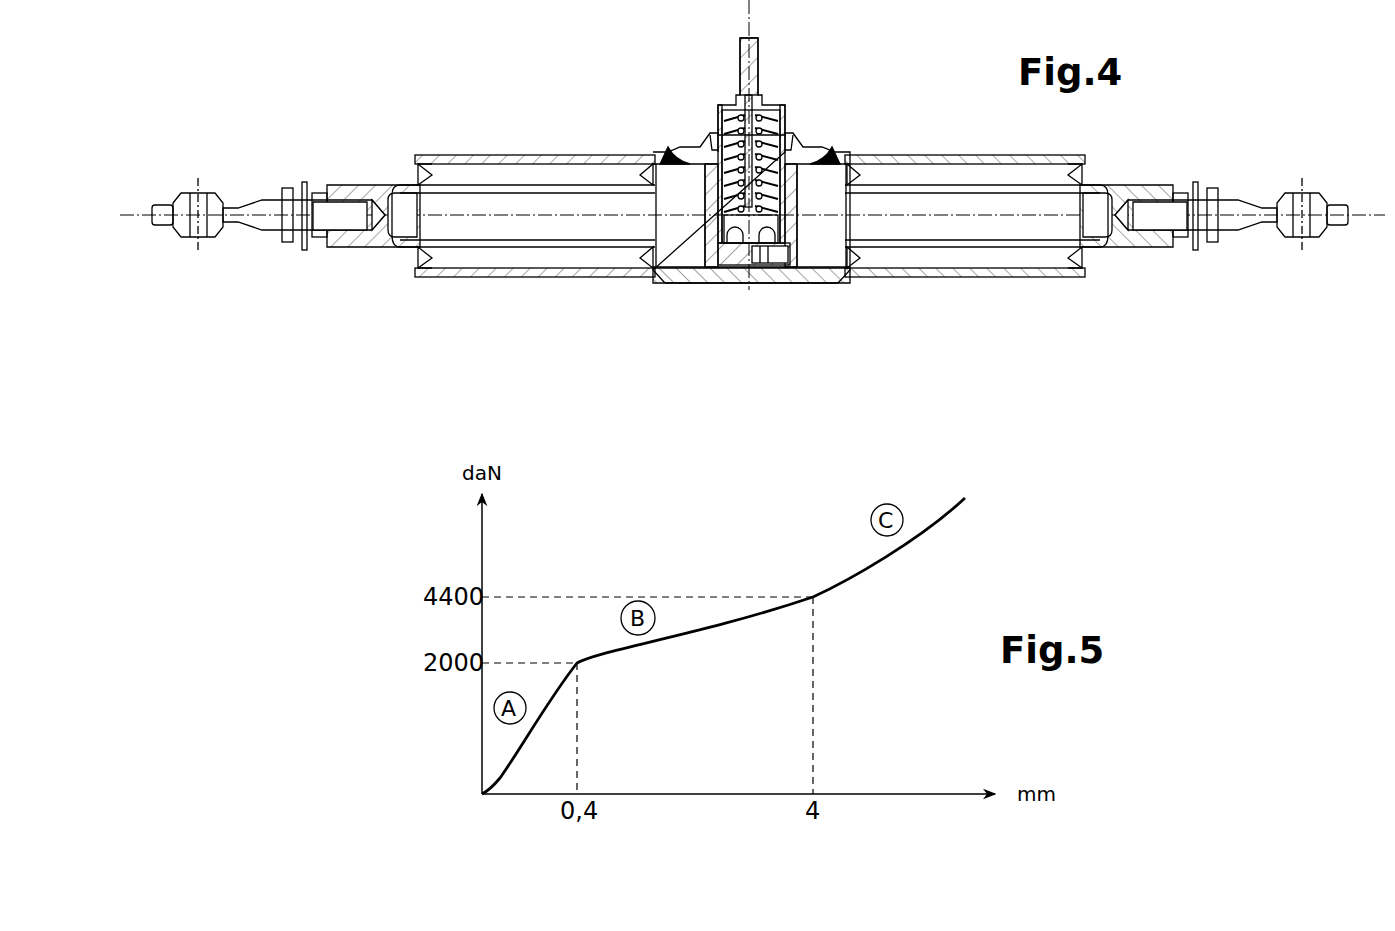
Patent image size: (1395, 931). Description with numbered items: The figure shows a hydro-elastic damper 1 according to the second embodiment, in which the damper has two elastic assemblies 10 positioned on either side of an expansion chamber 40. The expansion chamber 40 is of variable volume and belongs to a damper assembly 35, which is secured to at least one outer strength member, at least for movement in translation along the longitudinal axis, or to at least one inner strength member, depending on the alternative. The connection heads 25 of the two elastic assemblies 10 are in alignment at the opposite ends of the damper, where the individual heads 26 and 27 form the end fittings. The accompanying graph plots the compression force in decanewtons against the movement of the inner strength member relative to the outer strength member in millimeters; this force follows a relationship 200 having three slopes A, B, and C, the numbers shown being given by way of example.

In FIG. 4, the hydro-elastic damper 1 is at (384, 88).
In FIG. 4, the elastic assembly 10 is at (511, 287).
In FIG. 4, the damper assembly 35 is at (810, 117).
In FIG. 4, the expansion chamber 40 is at (767, 233).
In FIG. 4, the connection head 25 is at (280, 259).
In FIG. 4, the first ball joint 26 is at (165, 246).
In FIG. 4, the second ball joint 27 is at (1269, 250).
In FIG. 5, the relationship 200 is at (646, 656).